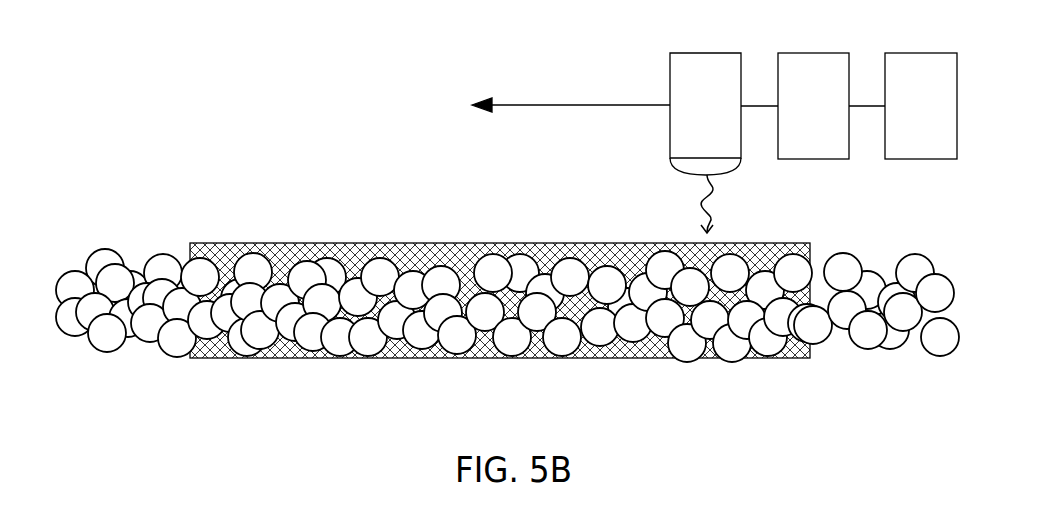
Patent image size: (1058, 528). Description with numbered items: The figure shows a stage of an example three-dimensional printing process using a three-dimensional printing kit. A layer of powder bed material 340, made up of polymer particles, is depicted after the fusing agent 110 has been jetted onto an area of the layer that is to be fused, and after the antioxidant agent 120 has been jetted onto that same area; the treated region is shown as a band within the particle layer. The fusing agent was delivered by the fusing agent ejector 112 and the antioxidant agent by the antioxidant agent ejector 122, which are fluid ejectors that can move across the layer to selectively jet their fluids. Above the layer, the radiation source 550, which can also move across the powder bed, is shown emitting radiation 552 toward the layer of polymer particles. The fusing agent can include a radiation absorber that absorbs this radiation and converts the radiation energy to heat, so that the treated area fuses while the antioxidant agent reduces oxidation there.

The layer of powder bed material 340 is at (102, 263).
The fusing agent 110 is at (500, 263).
The antioxidant agent 120 is at (400, 260).
The radiation source 550 is at (726, 118).
The radiation 552 is at (697, 221).
The antioxidant agent ejector 122 is at (834, 118).
The fusing agent ejector 112 is at (942, 118).